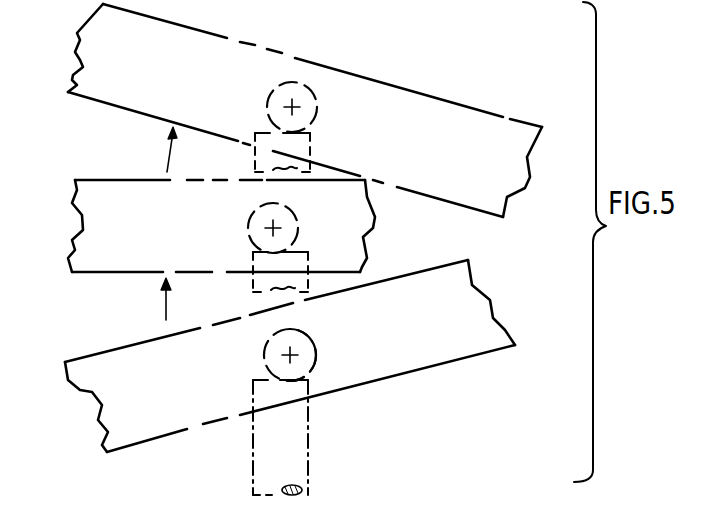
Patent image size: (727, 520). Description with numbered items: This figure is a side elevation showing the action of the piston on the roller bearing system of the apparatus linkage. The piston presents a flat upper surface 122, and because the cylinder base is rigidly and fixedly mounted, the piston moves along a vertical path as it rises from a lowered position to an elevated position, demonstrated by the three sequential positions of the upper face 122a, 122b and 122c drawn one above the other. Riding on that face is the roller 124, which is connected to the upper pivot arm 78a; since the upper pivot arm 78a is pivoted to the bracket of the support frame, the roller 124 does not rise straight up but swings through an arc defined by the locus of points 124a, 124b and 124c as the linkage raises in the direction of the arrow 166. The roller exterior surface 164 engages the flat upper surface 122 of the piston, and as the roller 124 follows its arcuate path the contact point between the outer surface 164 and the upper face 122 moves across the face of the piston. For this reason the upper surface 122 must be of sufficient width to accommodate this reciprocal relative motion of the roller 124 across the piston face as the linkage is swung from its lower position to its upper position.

The upper pivot arm 78a is at (430, 347).
The upper surface of the piston 122 is at (254, 378).
The lowered position of the piston upper surface 122a is at (308, 458).
The intermediate position of the piston upper surface 122b is at (308, 262).
The elevated position of the piston upper surface 122c is at (310, 145).
The roller 124 is at (311, 336).
The first roller position 124a is at (286, 351).
The second roller position 124b is at (270, 225).
The third roller position 124c is at (287, 102).
The roller exterior surface 164 is at (313, 365).
The arrow indicating direction of linkage raising 166 is at (168, 149).